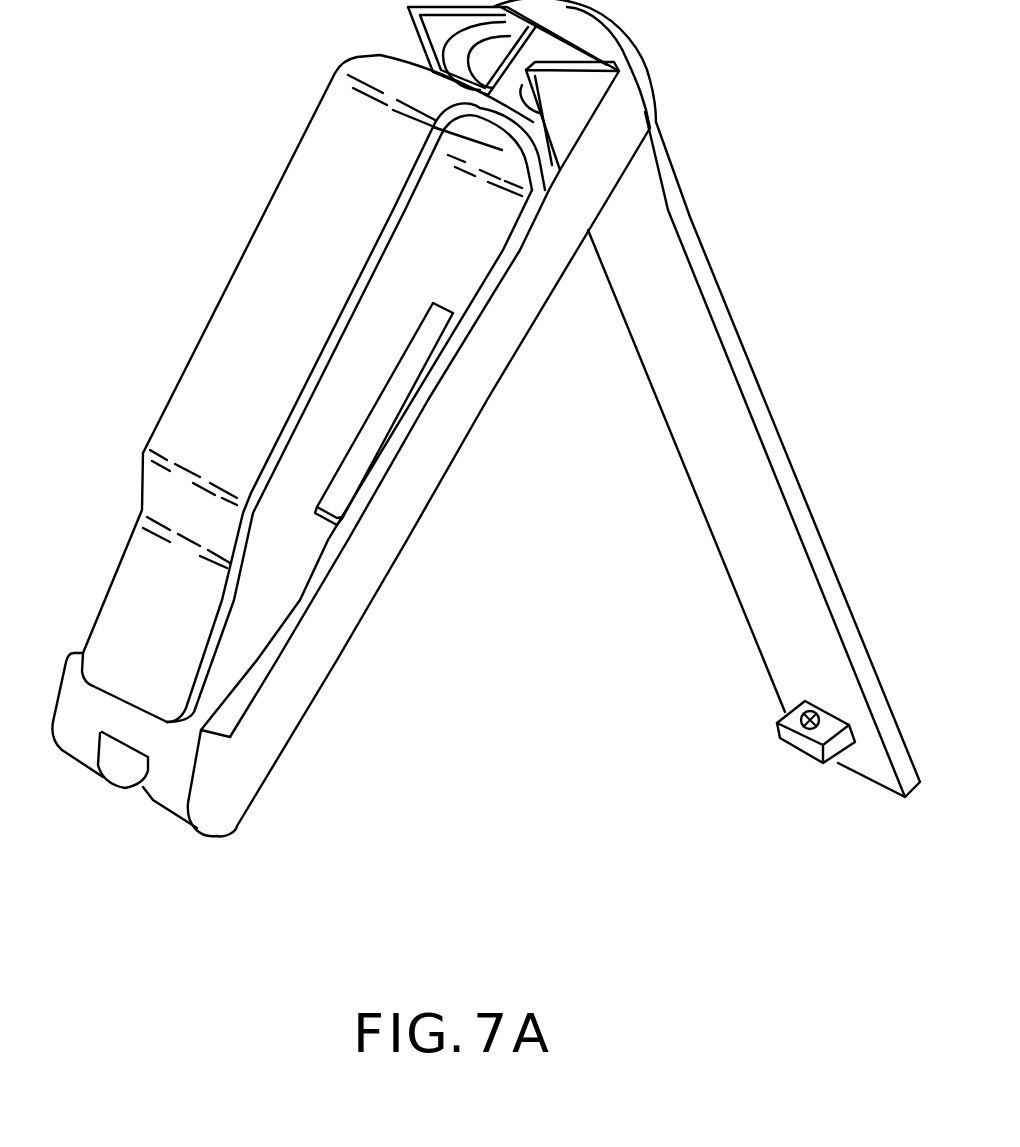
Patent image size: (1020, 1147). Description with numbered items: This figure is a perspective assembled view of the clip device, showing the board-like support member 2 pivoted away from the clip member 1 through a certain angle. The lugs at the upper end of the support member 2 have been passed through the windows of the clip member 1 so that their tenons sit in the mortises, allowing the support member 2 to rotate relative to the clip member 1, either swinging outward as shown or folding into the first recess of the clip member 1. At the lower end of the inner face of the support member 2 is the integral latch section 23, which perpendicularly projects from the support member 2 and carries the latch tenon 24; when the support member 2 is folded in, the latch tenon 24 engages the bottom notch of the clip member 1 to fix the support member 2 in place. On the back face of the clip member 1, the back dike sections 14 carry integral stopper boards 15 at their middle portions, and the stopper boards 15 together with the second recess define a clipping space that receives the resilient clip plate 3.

The clip member 1 is at (408, 469).
The support member 2 is at (707, 435).
The resilient clip plate 3 is at (252, 322).
The dike section 14 is at (317, 577).
The stopper board 15 is at (425, 353).
The latch section 23 is at (793, 743).
The latch tenon 24 is at (801, 718).